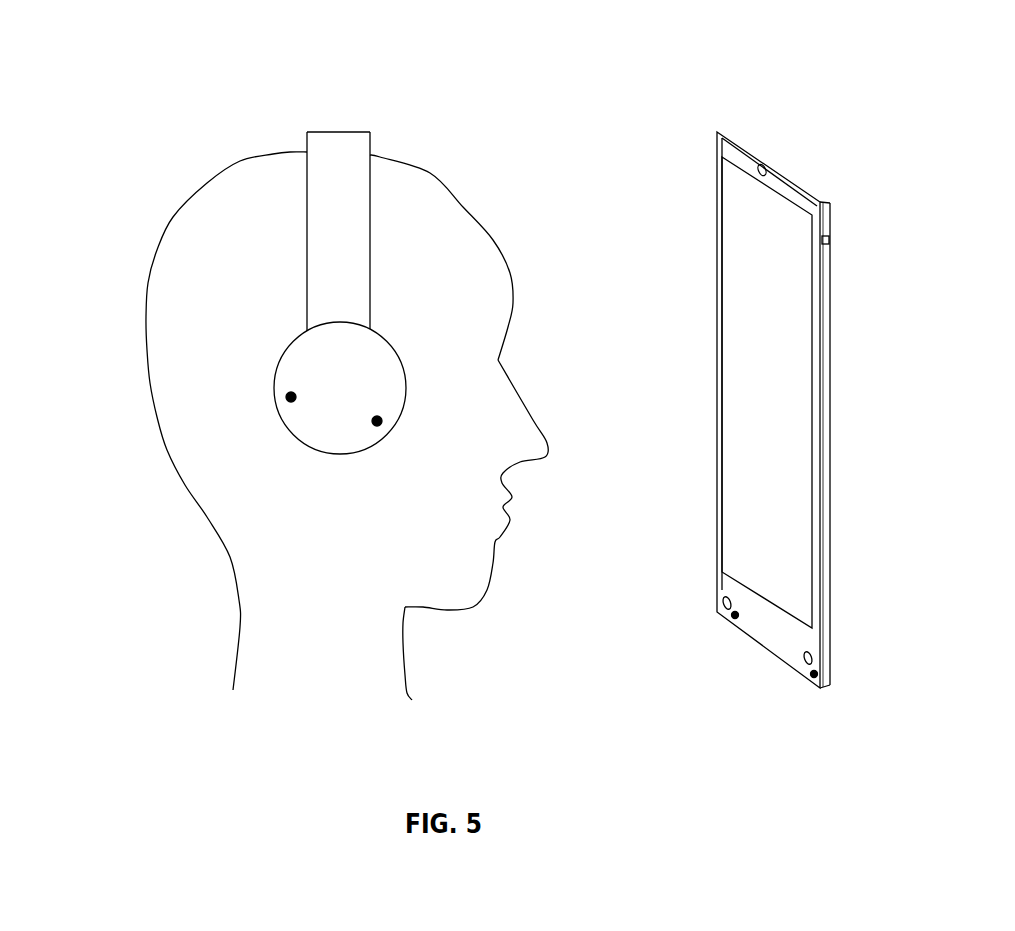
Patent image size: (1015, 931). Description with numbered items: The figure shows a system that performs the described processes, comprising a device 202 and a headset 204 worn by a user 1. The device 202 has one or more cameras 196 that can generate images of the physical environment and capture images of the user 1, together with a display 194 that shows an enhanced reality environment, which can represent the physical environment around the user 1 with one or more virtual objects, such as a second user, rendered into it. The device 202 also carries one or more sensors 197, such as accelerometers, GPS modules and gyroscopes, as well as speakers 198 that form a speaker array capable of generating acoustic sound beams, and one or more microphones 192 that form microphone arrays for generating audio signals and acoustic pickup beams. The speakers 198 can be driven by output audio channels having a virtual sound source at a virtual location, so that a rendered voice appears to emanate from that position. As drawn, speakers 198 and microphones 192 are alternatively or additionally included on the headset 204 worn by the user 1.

The user 1 is at (200, 212).
The headset 204 is at (347, 131).
The speakers 198 is at (803, 662).
The microphones 192 is at (291, 397).
The device 202 is at (830, 385).
The display 194 is at (745, 255).
The cameras 196 is at (783, 168).
The sensors 197 is at (828, 238).